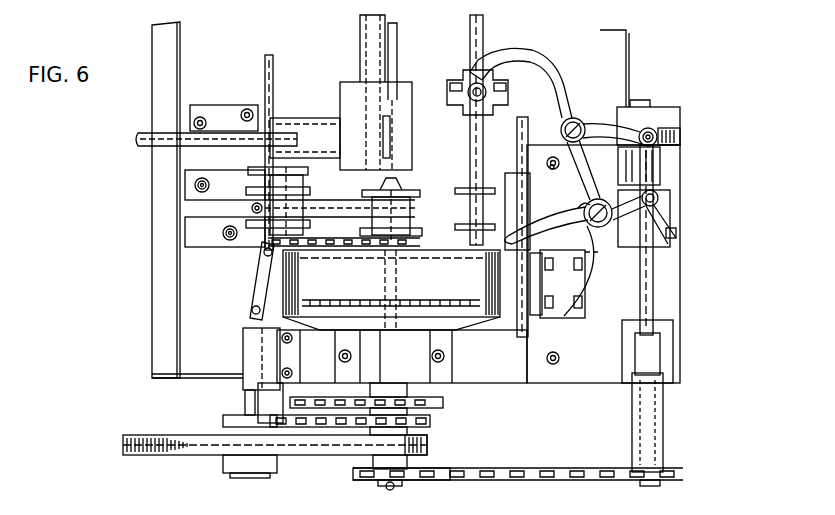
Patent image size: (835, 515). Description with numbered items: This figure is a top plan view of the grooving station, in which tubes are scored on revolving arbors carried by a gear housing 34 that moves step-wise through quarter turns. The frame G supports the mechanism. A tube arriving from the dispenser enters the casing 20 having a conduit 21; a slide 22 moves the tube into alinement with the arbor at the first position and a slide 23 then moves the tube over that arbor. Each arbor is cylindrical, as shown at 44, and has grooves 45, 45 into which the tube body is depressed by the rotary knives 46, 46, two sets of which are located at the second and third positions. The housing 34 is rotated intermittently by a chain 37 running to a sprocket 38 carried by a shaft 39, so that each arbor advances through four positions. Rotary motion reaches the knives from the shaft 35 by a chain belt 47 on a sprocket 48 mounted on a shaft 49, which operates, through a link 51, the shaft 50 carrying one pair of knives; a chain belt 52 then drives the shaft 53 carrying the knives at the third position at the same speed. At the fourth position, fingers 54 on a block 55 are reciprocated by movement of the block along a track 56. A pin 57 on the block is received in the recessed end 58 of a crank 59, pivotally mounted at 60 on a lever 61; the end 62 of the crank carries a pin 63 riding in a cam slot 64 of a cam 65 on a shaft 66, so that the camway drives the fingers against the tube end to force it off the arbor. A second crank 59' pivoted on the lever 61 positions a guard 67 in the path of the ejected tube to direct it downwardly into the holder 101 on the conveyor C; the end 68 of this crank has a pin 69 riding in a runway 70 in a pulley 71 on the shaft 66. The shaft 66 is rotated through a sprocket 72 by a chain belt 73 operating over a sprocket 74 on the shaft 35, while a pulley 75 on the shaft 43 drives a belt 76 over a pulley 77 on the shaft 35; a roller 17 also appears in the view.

The frame G is at (152, 205).
The roller 17 is at (488, 92).
The casing 20 is at (360, 46).
The conduit 21 is at (372, 17).
The slide 22 is at (314, 122).
The slide 23 is at (396, 118).
The gear housing 34 is at (391, 290).
The shaft 35 is at (394, 488).
The chain 37 is at (446, 400).
The sprocket 38 is at (278, 403).
The shaft 39 is at (322, 378).
The shaft 43 is at (246, 478).
The arbor 44 is at (414, 208).
The grooves 45 is at (470, 190).
The rotary knives 46 is at (250, 182).
The chain belt 47 is at (432, 424).
The sprocket 48 is at (240, 420).
The shaft 49 is at (243, 353).
The shaft 50 is at (265, 68).
The link 51 is at (256, 290).
The chain belt 52 is at (418, 246).
The shaft 53 is at (416, 244).
The fingers 54 is at (508, 184).
The block 55 is at (516, 200).
The track 56 is at (528, 126).
The pin 57 is at (554, 272).
The recessed end 58 is at (520, 228).
The crank 59 is at (582, 228).
The second crank 59' is at (601, 115).
The pivot 60 is at (612, 219).
The lever 61 is at (602, 256).
The end of crank 62 is at (658, 208).
The pin 63 is at (660, 192).
The cam slot 64 is at (676, 238).
The cam 65 is at (660, 250).
The shaft 66 is at (650, 302).
The guard 67 is at (488, 56).
The end of second crank 68 is at (638, 118).
The pin 69 is at (652, 130).
The runway 70 is at (678, 134).
The pulley 71 is at (660, 110).
The sprocket 72 is at (660, 486).
The chain belt 73 is at (544, 480).
The sprocket 74 is at (372, 480).
The pulley 75 is at (190, 456).
The belt 76 is at (334, 450).
The pulley 77 is at (430, 456).
The holder 101 is at (460, 78).
The conveyor C is at (462, 26).